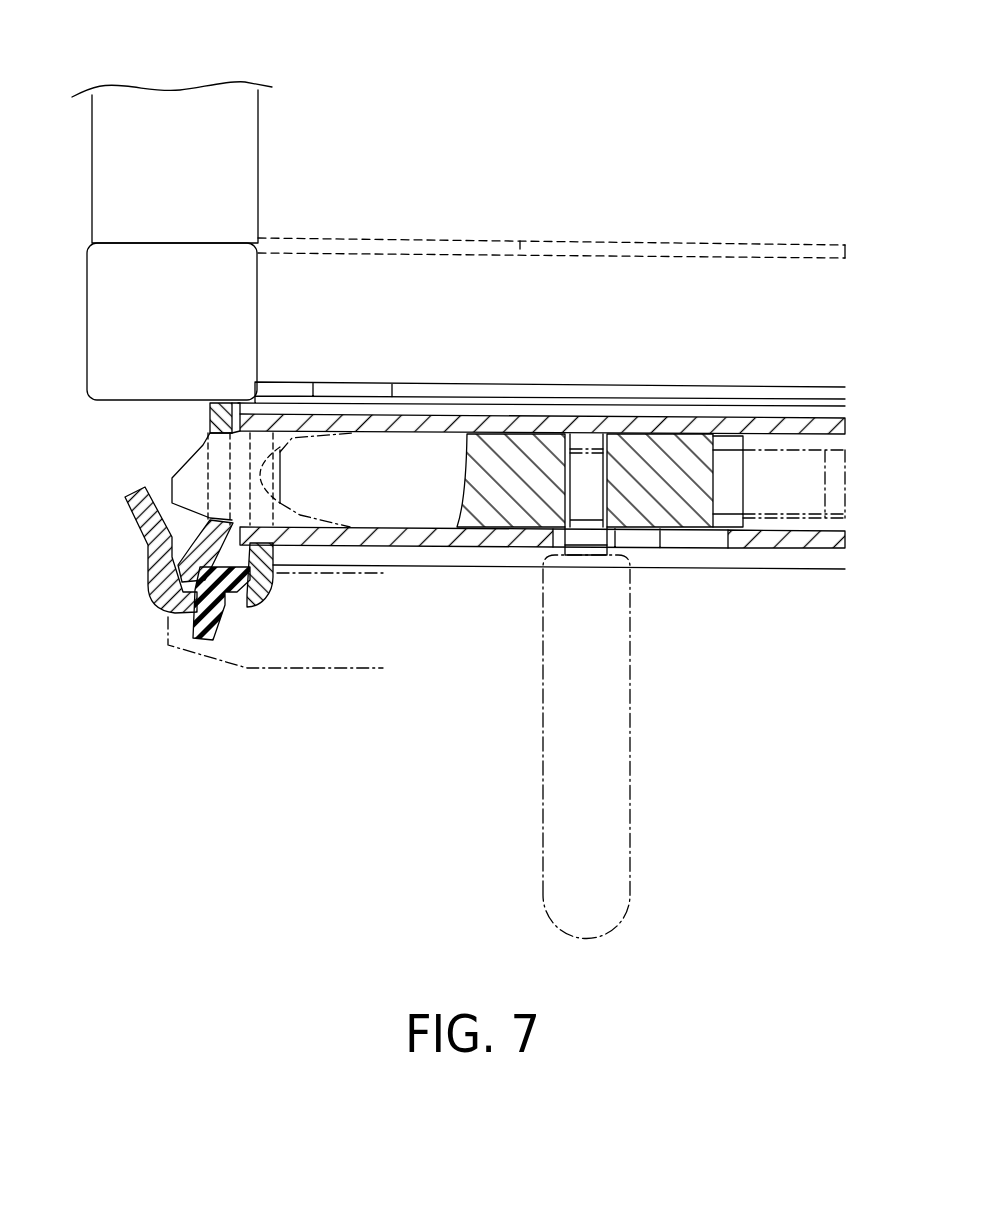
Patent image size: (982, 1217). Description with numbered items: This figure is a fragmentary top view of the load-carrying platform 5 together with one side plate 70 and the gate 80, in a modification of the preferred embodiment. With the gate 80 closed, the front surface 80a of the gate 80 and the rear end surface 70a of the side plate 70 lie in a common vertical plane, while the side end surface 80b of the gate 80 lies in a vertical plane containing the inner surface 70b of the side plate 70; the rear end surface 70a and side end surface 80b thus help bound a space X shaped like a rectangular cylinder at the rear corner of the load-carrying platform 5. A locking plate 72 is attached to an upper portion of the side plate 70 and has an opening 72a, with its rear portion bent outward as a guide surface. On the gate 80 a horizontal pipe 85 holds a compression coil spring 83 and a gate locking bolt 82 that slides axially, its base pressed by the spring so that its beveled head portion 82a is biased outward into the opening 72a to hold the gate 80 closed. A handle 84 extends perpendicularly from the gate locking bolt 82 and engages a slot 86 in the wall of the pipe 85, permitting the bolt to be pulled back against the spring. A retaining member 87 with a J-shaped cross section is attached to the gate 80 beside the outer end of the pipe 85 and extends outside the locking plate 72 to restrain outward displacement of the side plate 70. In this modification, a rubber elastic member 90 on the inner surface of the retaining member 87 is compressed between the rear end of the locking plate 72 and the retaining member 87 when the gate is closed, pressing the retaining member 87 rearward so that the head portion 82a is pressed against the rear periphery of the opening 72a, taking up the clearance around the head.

The load-carrying platform 5 is at (591, 149).
The side plate 70 is at (167, 123).
The rear end surface 70a is at (150, 400).
The inner surface 70b is at (258, 160).
The locking plate 72 is at (180, 560).
The opening 72a is at (207, 525).
The gate 80 is at (801, 570).
The front surface 80a is at (393, 400).
The side end surface 80b is at (312, 400).
The gate locking bolt 82 is at (413, 500).
The head portion 82a is at (203, 445).
The compression coil spring 83 is at (783, 425).
The handle 84 is at (543, 875).
The pipe 85 is at (313, 547).
The slot 86 is at (688, 532).
The retaining member 87 is at (157, 603).
The elastic member 90 is at (230, 583).
The space X is at (133, 466).